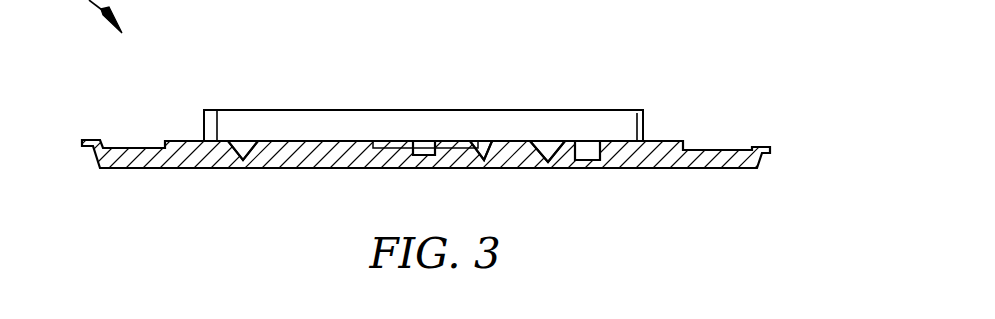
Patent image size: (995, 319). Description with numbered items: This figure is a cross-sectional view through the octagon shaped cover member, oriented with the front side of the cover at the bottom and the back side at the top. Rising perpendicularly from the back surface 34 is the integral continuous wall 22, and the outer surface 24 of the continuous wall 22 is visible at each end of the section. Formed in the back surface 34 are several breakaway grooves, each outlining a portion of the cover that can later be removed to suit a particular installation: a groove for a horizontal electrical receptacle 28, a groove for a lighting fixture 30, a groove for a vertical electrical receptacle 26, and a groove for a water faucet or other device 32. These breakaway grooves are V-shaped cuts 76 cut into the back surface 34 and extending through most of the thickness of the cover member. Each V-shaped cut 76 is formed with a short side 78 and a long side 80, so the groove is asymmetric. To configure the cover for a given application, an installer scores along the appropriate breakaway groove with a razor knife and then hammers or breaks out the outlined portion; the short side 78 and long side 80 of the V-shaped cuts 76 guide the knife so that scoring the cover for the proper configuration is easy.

The integral continuous wall 22 is at (613, 125).
The outer surface 24 is at (204, 128).
The vertical electrical receptacle breakaway groove 26 is at (545, 150).
The horizontal electrical receptacle breakaway groove 28 is at (236, 160).
The lighting fixture breakaway groove 30 is at (245, 160).
The water faucet or other device breakaway groove 32 is at (370, 160).
The back surface 34 is at (147, 140).
The V-shaped cuts 76 is at (307, 143).
The short side 78 is at (212, 168).
The long side 80 is at (228, 140).